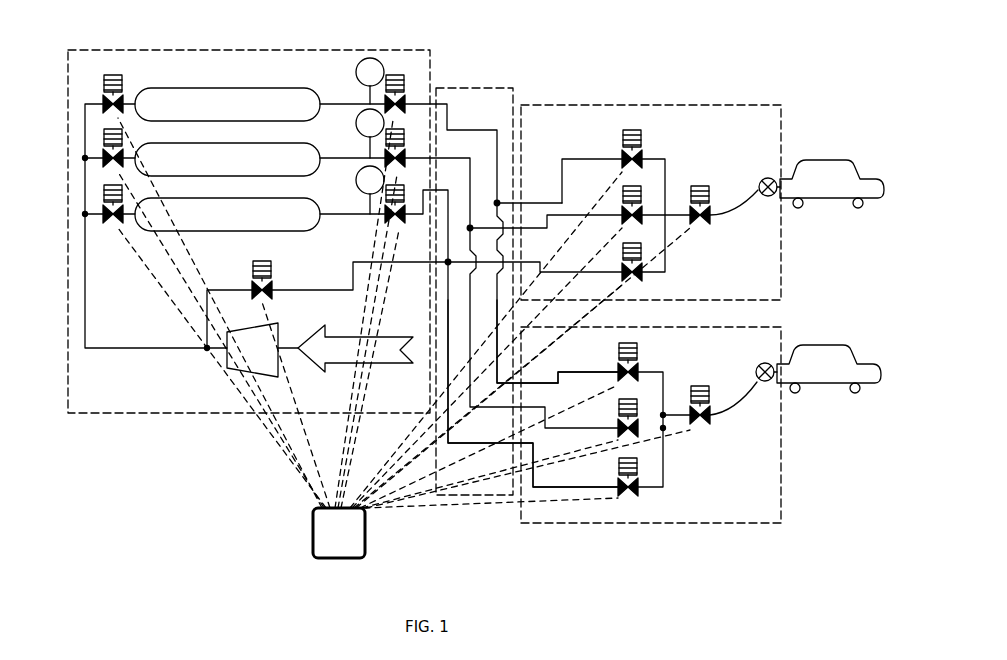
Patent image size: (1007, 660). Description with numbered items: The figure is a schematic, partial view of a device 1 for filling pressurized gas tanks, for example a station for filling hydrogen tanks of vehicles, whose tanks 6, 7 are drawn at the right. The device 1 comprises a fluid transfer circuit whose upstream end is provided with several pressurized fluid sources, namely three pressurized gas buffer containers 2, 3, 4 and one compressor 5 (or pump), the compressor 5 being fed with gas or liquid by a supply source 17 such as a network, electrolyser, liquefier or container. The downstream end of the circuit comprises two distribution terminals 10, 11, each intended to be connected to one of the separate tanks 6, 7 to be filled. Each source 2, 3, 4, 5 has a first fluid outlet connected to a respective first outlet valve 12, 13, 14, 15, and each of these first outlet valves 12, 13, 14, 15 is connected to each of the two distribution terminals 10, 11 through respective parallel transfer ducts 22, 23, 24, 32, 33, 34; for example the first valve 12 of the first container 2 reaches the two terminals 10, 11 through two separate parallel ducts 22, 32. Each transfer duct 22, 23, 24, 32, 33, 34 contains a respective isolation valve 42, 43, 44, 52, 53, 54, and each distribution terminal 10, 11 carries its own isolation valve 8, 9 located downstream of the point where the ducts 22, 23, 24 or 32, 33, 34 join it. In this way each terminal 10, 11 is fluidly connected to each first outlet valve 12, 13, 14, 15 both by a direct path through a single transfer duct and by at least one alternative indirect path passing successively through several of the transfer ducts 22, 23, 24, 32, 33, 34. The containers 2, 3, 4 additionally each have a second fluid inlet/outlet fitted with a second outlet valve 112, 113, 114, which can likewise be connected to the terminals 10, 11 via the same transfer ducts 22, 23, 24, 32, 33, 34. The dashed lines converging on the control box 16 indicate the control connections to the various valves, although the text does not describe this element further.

The device 1 is at (316, 453).
The pressurized gas buffer container 2 is at (216, 113).
The pressurized gas buffer container 3 is at (216, 167).
The pressurized gas buffer container 4 is at (216, 223).
The compressor 5 is at (258, 359).
The tank 6 is at (843, 160).
The tank 7 is at (842, 350).
The isolation valve 8 is at (704, 232).
The isolation valve 9 is at (700, 432).
The distribution terminal 10 is at (744, 180).
The distribution terminal 11 is at (737, 407).
The first outlet valve 12 is at (396, 72).
The first outlet valve 13 is at (410, 126).
The first outlet valve 14 is at (408, 184).
The first outlet valve 15 is at (245, 272).
The control unit 16 is at (332, 541).
The supply source 17 is at (316, 357).
The transfer duct 22 is at (600, 157).
The transfer duct 23 is at (556, 196).
The transfer duct 24 is at (508, 200).
The transfer duct 32 is at (583, 378).
The transfer duct 33 is at (496, 400).
The transfer duct 34 is at (462, 442).
The isolation valve 42 is at (634, 126).
The isolation valve 43 is at (648, 186).
The isolation valve 44 is at (642, 280).
The isolation valve 52 is at (646, 358).
The isolation valve 53 is at (640, 440).
The isolation valve 54 is at (629, 500).
The second outlet valve 112 is at (96, 86).
The second outlet valve 113 is at (96, 143).
The second outlet valve 114 is at (96, 204).